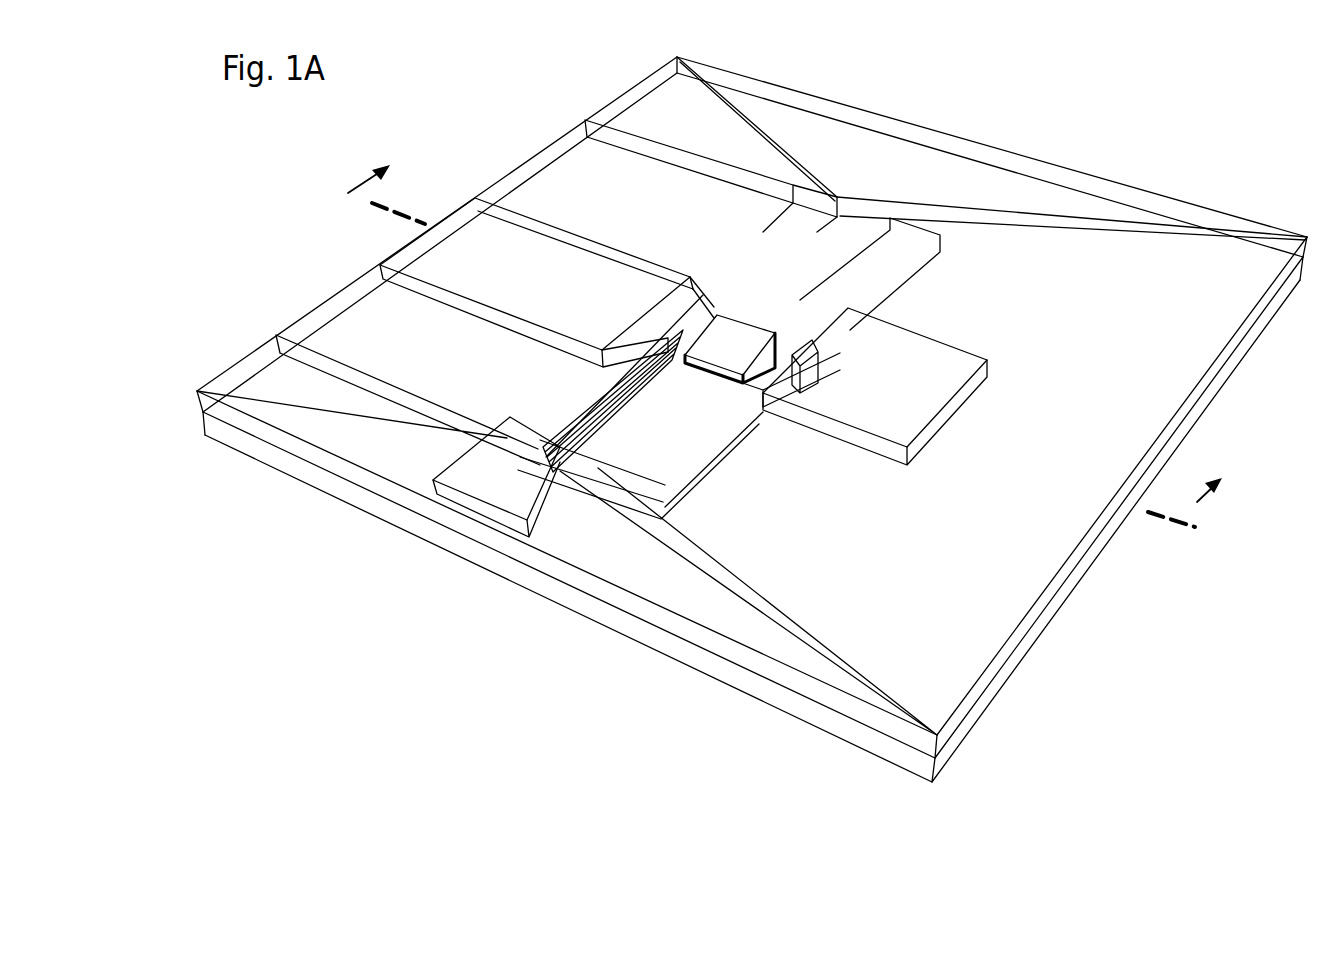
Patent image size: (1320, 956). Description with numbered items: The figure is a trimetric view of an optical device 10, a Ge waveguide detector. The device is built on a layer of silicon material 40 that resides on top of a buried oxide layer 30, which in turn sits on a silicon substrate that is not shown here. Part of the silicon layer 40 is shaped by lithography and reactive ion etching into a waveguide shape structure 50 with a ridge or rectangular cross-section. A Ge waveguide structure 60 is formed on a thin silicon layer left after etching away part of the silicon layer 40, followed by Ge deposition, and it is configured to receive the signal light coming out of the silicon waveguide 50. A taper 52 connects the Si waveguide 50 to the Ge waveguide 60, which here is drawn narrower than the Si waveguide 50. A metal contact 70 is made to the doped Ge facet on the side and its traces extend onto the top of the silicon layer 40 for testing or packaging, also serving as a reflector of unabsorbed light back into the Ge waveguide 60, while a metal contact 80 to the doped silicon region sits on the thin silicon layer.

The optical device 10 is at (848, 90).
The buried oxide layer 30 is at (253, 447).
The layer of silicon material 40 is at (362, 479).
The waveguide shape structure 50 is at (500, 258).
The taper 52 is at (613, 363).
The Ge waveguide structure 60 is at (723, 340).
The metal contact 70 is at (912, 362).
The metal contact 80 is at (518, 492).